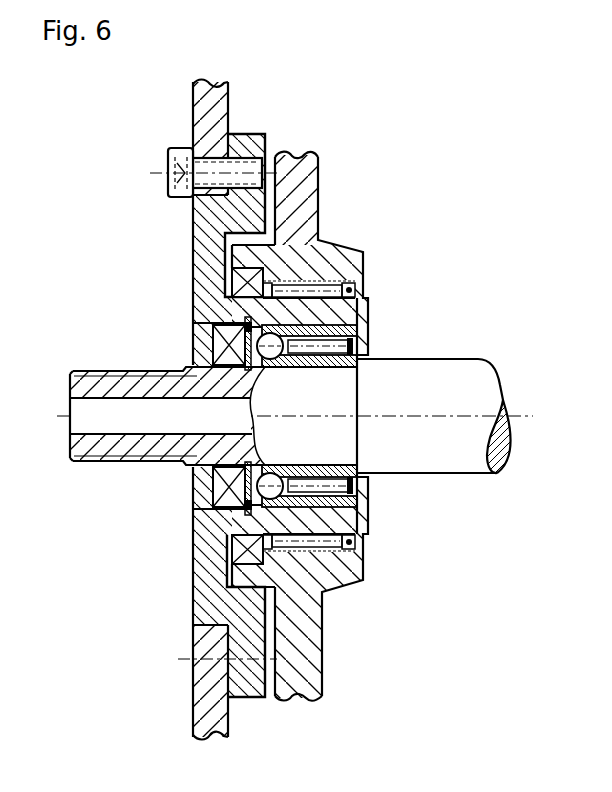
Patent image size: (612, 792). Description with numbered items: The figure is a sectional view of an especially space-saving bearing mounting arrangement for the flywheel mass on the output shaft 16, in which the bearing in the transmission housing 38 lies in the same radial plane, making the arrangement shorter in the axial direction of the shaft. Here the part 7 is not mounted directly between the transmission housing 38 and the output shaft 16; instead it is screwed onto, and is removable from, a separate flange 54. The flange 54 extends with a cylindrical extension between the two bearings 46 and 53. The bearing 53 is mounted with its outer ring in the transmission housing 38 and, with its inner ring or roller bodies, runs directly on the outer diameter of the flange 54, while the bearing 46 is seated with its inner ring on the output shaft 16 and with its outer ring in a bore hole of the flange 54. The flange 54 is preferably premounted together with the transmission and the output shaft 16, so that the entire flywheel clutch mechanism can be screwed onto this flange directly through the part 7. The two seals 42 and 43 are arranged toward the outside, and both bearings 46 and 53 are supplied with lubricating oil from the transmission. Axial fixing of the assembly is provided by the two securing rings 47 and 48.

The part 7 is at (218, 128).
The flange 54 is at (222, 219).
The bearing 53 is at (360, 248).
The transmission housing 38 is at (297, 608).
The seal 43 is at (240, 282).
The seal 42 is at (222, 347).
The bearing 46 is at (330, 333).
The securing ring 48 is at (248, 468).
The securing ring 47 is at (250, 505).
The output shaft 16 is at (465, 397).